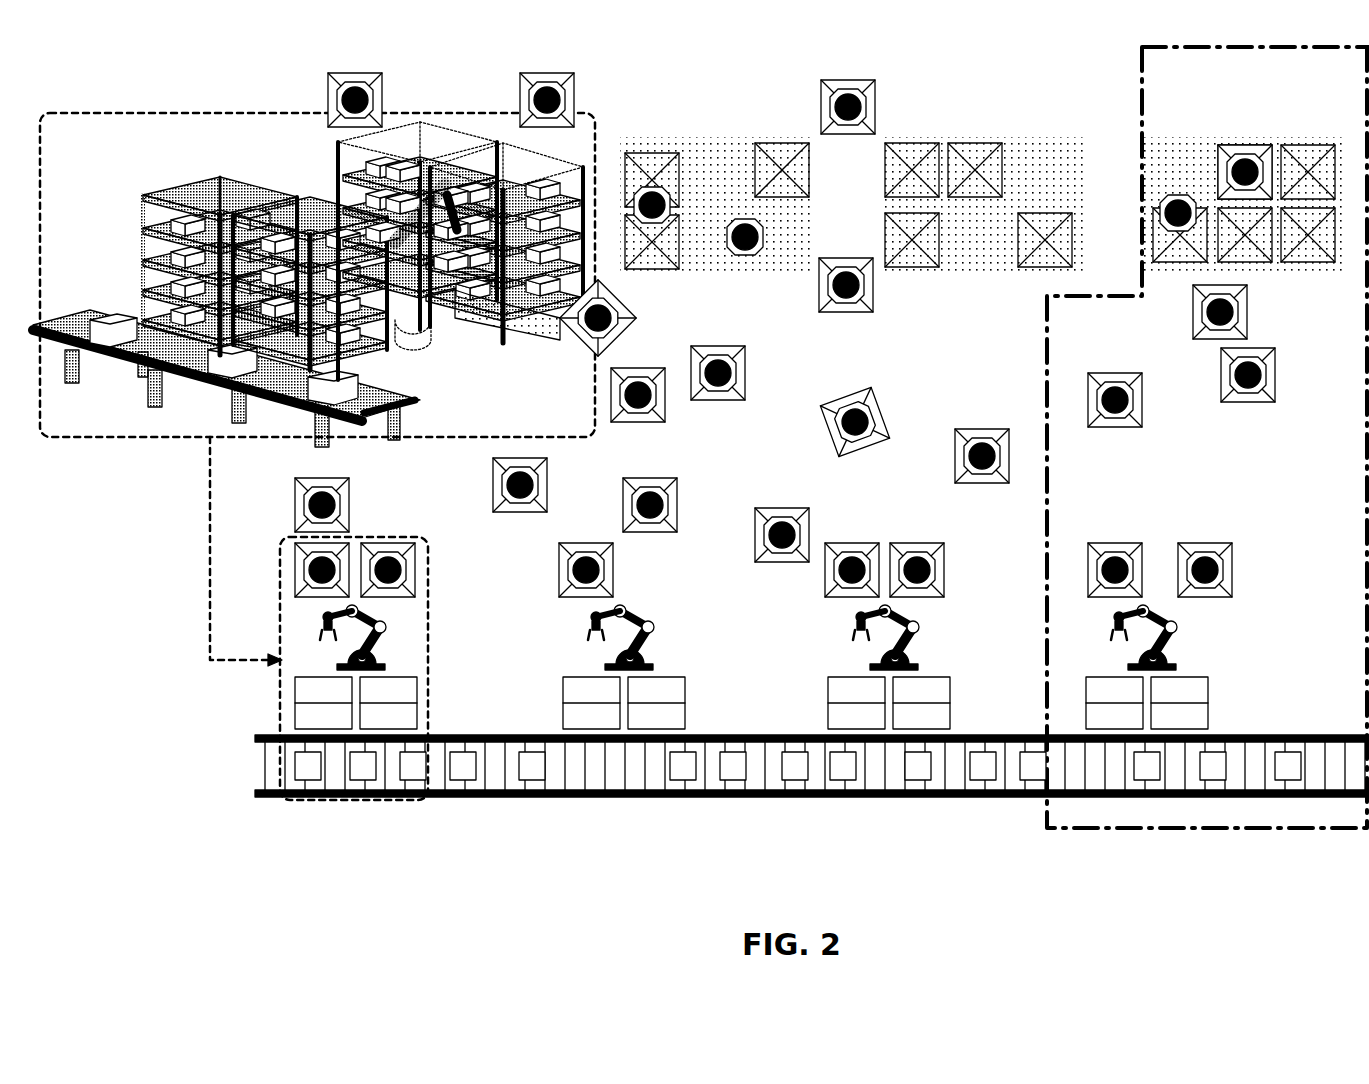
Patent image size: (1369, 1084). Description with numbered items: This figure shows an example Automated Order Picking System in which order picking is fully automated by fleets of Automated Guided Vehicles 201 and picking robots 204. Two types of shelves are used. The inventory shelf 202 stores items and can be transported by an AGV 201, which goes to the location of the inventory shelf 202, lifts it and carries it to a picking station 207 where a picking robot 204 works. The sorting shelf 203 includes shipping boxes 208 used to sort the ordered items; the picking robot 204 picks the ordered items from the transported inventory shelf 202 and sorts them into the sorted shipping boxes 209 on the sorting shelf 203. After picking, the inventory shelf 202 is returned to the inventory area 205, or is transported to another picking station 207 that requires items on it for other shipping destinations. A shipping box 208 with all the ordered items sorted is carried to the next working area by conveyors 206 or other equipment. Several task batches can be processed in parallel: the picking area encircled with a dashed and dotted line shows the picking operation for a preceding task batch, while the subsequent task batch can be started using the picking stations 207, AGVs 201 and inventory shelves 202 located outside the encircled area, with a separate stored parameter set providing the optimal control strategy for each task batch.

The Automated Guided Vehicle 201 is at (740, 254).
The inventory shelf 202 is at (992, 275).
The sorting shelf 203 is at (662, 673).
The picking robot 204 is at (348, 185).
The inventory area 205 is at (990, 138).
The conveyor 206 is at (173, 375).
The picking station 207 is at (122, 113).
The shipping box 208 is at (165, 215).
The sorted shipping box 209 is at (912, 790).